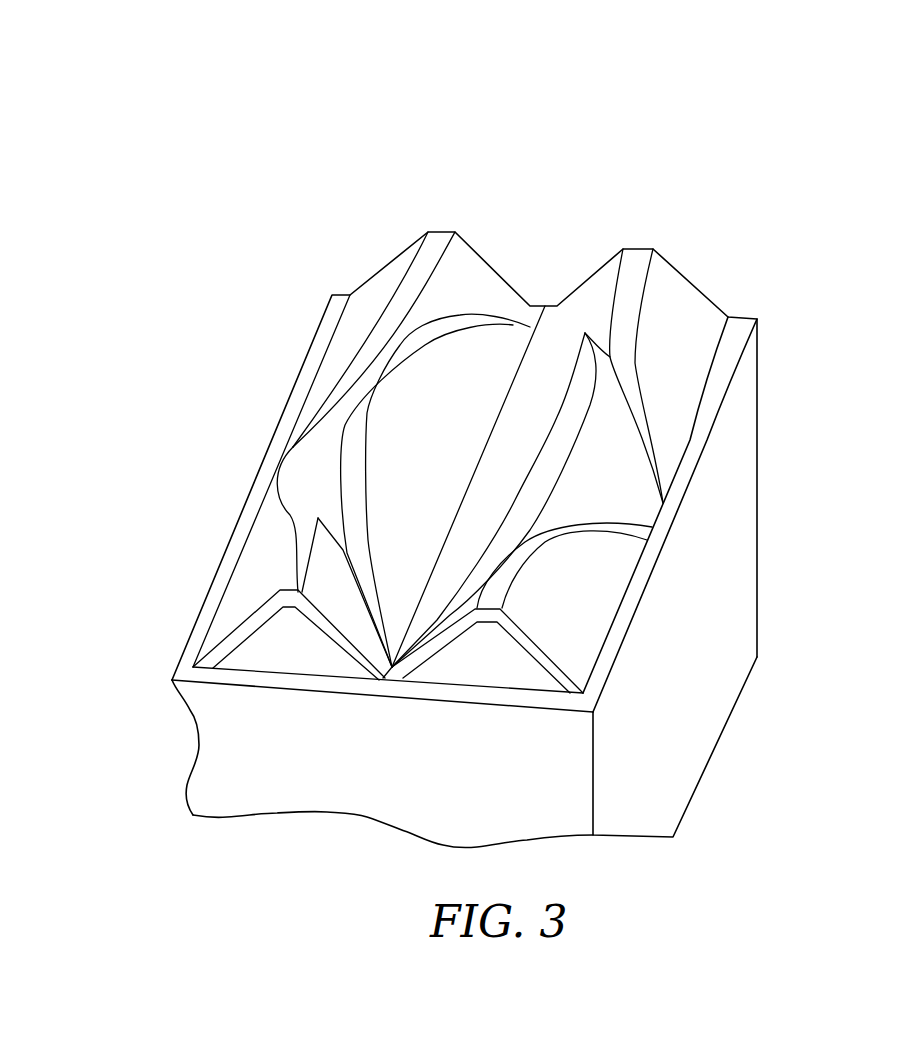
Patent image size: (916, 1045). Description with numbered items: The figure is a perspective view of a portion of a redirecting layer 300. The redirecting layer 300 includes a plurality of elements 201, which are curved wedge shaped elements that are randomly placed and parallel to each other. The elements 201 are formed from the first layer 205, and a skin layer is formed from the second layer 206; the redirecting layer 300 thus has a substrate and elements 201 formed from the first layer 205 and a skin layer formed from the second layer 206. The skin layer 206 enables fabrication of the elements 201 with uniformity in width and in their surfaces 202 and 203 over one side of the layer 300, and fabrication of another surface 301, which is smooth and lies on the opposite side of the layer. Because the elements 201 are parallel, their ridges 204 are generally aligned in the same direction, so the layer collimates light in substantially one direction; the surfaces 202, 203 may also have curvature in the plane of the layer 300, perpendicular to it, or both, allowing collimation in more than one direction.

The redirecting layer 300 is at (181, 130).
The element 201 is at (437, 231).
The surface 202 is at (612, 478).
The surface 203 is at (500, 363).
The ridge 204 is at (565, 412).
The first layer 205 is at (283, 657).
The second layer 206 is at (250, 623).
The surface 301 is at (240, 779).